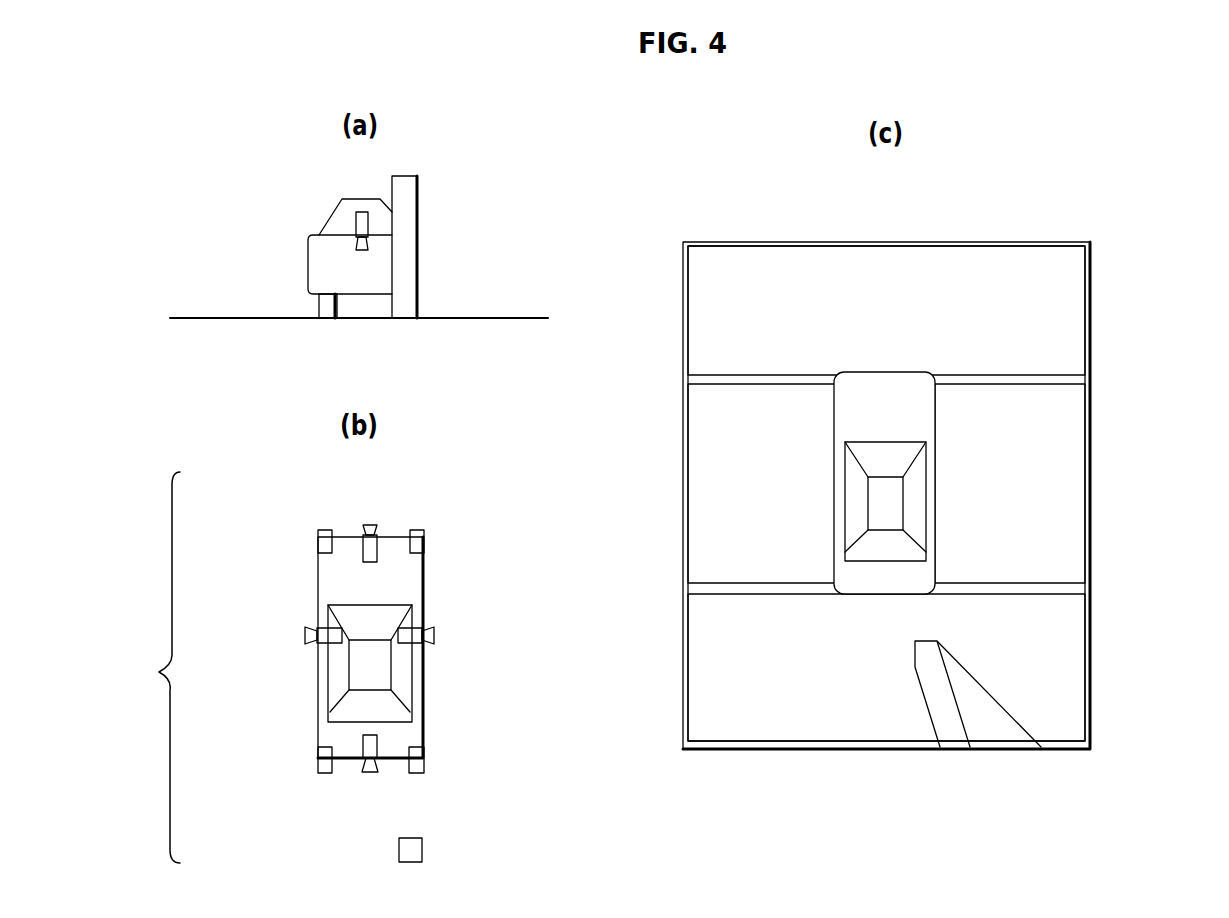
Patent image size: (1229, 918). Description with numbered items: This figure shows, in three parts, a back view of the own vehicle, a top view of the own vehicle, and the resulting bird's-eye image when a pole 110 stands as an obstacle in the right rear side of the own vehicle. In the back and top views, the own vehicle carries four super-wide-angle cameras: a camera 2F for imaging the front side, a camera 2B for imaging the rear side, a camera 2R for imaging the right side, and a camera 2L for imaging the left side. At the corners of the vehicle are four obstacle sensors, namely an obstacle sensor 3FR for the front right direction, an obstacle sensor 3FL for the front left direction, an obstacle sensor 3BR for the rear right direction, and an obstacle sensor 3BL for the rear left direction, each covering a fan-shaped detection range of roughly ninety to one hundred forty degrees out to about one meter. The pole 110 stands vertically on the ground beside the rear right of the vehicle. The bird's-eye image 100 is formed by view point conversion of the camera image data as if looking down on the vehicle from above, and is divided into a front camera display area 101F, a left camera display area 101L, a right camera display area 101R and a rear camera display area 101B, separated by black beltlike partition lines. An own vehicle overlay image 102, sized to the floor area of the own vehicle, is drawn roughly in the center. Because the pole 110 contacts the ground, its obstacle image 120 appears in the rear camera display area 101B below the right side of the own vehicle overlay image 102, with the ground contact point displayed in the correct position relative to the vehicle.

The camera 2F is at (377, 548).
The camera 2B is at (356, 215).
The camera 2L is at (318, 640).
The camera 2R is at (423, 632).
The obstacle sensor 3FL is at (318, 546).
The obstacle sensor 3FR is at (424, 545).
The obstacle sensor 3BL is at (318, 757).
The obstacle sensor 3BR is at (424, 760).
The bird's-eye image 100 is at (1026, 236).
The front camera display area 101F is at (1073, 262).
The right camera display area 101R is at (1072, 418).
The left camera display area 101L is at (701, 545).
The rear camera display area 101B is at (1064, 666).
The own vehicle overlay image 102 is at (931, 557).
The pole 110 is at (405, 198).
The obstacle image 120 is at (1000, 721).